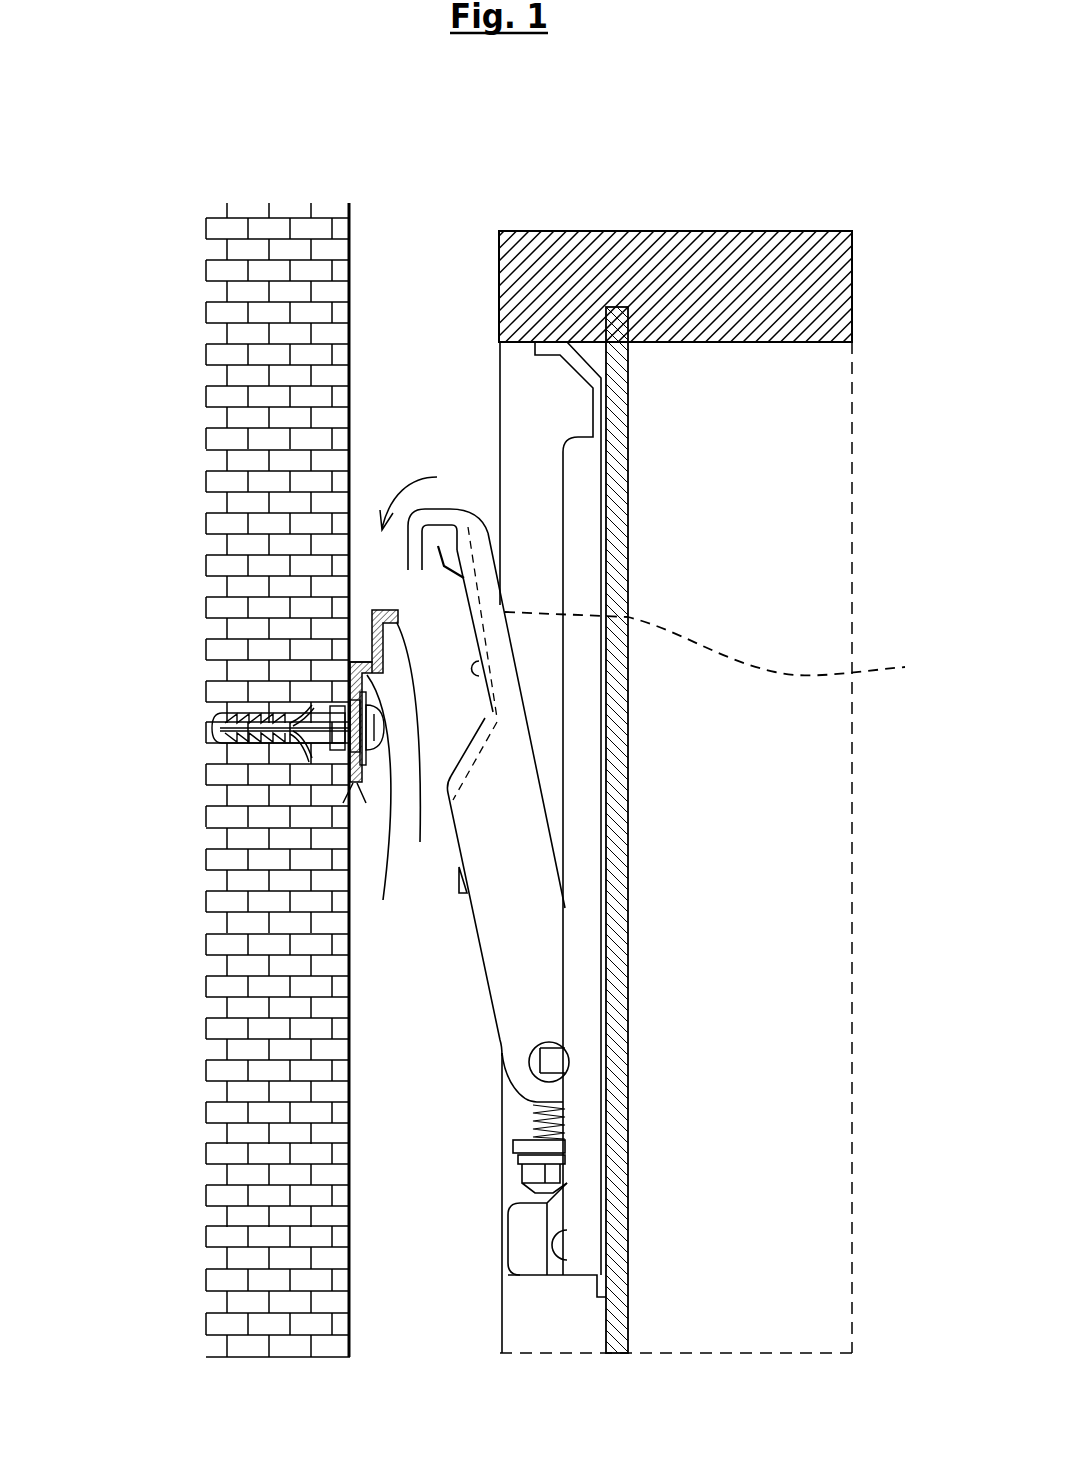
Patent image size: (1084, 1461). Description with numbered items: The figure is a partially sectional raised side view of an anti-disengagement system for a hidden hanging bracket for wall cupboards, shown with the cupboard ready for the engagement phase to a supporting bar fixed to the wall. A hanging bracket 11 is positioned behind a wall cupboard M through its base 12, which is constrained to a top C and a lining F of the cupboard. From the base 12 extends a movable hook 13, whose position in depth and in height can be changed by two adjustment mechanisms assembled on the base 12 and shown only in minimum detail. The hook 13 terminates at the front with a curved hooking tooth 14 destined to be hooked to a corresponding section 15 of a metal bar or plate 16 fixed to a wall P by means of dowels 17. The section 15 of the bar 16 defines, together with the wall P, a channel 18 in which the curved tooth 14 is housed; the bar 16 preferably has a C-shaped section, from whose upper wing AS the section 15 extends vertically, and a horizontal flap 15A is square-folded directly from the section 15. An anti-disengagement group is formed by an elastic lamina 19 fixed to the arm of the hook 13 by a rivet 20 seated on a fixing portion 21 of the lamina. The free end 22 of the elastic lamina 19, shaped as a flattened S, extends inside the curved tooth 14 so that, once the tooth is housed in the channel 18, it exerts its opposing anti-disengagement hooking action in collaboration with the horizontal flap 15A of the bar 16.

The wall P is at (287, 237).
The wall cupboard M is at (673, 704).
The top C is at (762, 243).
The lining F is at (620, 455).
The hanging bracket 11 is at (526, 725).
The base 12 is at (580, 1233).
The hook 13 is at (527, 888).
The curved hooking tooth 14 is at (403, 548).
The section of the bar 15 is at (370, 625).
The horizontal flap 15A is at (406, 761).
The metal bar or plate 16 is at (364, 801).
The dowels 17 is at (245, 735).
The channel 18 is at (357, 642).
The elastic lamina 19 is at (452, 570).
The rivet 20 is at (478, 672).
The fixing portion 21 is at (731, 643).
The free end 22 is at (461, 510).
The upper wing AS is at (386, 940).